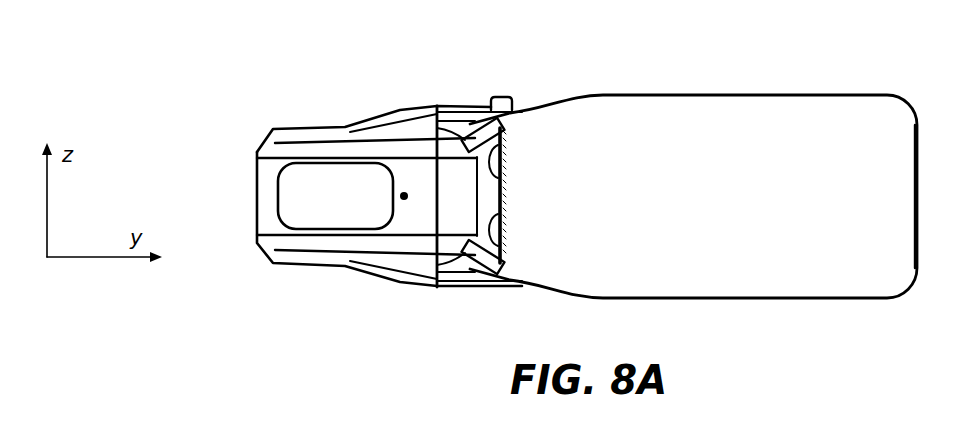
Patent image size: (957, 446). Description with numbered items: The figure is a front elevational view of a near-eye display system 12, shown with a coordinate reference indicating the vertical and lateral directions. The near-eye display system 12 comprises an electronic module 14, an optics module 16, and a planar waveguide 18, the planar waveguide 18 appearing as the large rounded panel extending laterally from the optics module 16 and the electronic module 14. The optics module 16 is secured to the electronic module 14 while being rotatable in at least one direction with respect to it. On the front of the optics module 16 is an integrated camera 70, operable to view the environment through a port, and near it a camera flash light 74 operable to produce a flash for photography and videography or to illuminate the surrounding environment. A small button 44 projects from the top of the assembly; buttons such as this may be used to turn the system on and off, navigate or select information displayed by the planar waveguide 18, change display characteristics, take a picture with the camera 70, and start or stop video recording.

The near-eye display system 12 is at (566, 205).
The electronic module 14 is at (478, 88).
The optics module 16 is at (335, 128).
The planar waveguide 18 is at (836, 233).
The button 44 is at (502, 96).
The integrated camera 70 is at (288, 198).
The camera flash light 74 is at (401, 217).